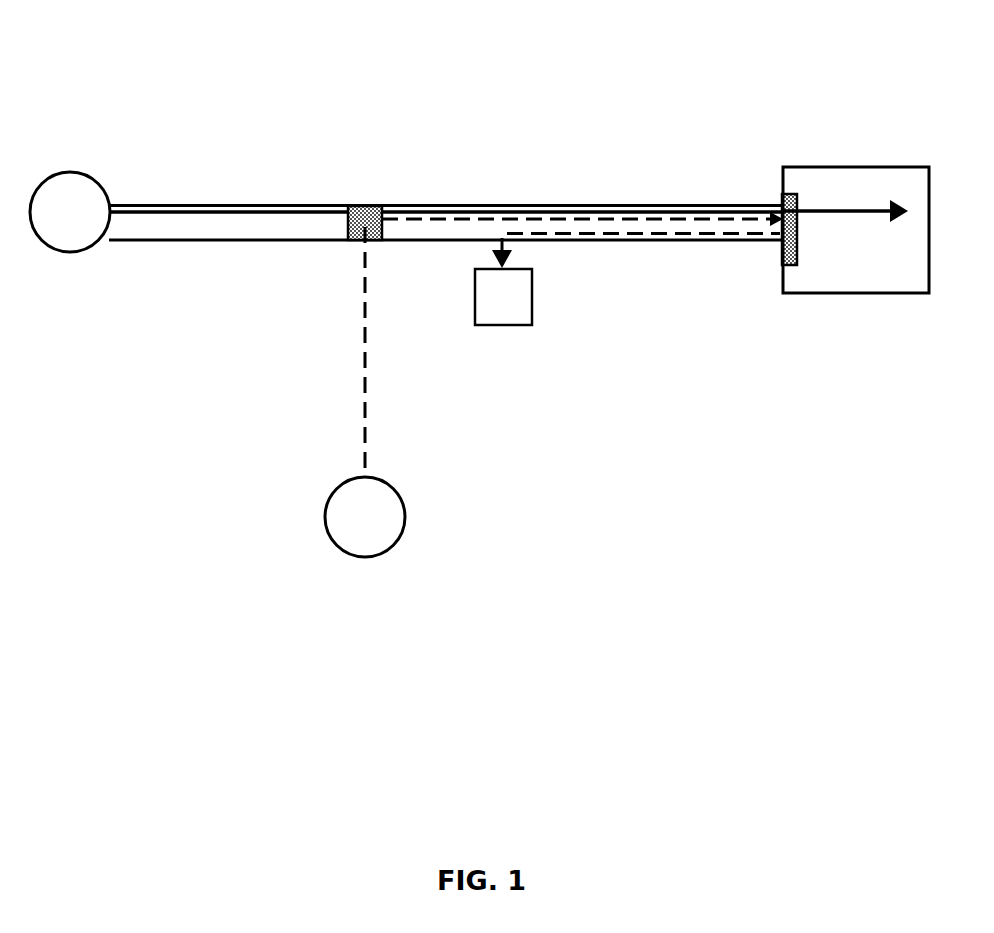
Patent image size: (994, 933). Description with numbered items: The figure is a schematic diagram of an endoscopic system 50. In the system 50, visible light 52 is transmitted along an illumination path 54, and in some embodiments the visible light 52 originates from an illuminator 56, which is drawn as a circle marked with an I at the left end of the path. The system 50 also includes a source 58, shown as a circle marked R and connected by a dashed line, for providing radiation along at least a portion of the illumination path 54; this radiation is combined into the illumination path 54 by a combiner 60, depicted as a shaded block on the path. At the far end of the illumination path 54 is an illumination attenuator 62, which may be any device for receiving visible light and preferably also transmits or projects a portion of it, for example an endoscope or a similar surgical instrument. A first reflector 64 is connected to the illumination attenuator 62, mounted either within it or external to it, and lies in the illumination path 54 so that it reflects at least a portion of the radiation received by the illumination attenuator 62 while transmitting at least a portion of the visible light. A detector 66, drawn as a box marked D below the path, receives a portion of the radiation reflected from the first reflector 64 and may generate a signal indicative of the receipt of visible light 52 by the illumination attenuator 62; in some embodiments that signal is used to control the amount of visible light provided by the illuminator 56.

The endoscopic system 50 is at (246, 68).
The visible light 52 is at (165, 205).
The illumination path 54 is at (259, 196).
The illuminator 56 is at (72, 172).
The source 58 is at (325, 517).
The combiner 60 is at (378, 206).
The illumination attenuator 62 is at (855, 167).
The first reflector 64 is at (782, 196).
The detector 66 is at (475, 325).